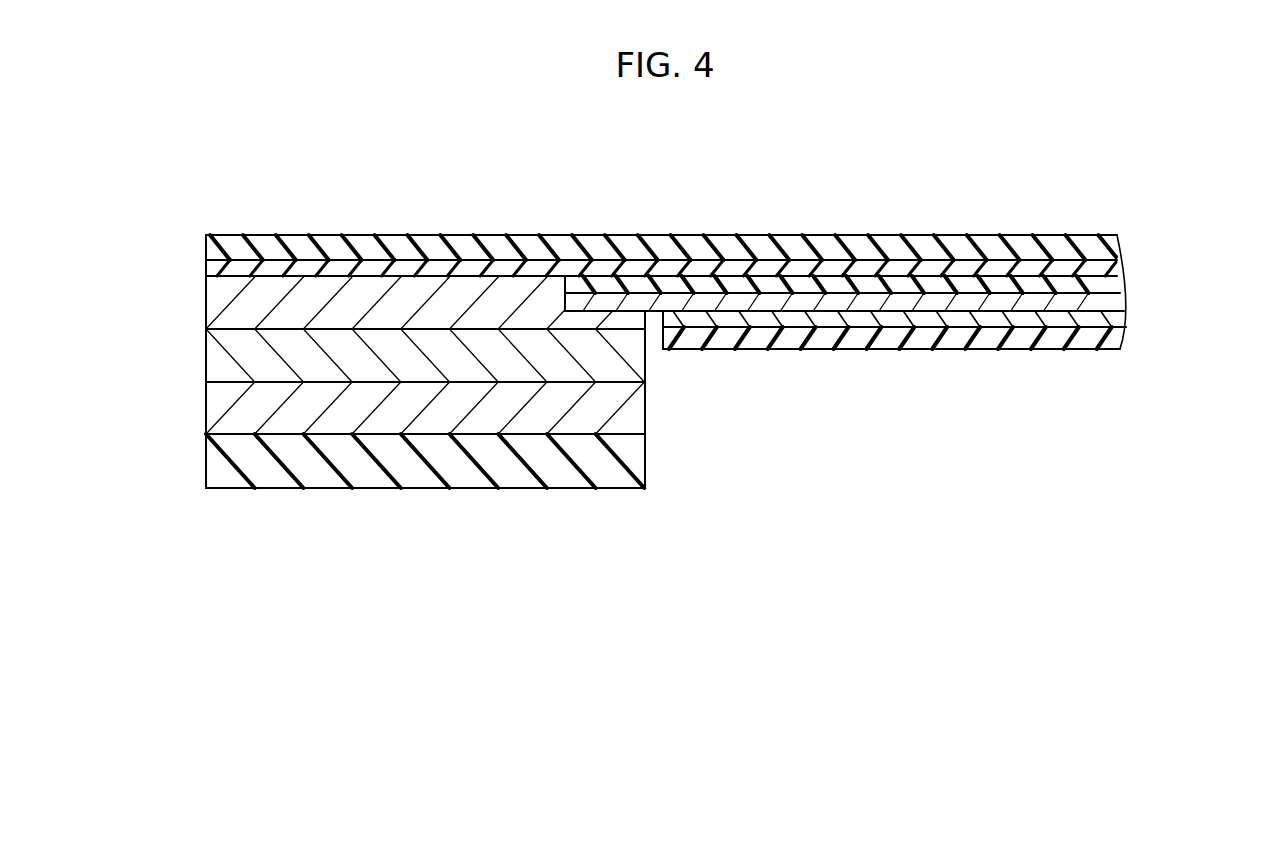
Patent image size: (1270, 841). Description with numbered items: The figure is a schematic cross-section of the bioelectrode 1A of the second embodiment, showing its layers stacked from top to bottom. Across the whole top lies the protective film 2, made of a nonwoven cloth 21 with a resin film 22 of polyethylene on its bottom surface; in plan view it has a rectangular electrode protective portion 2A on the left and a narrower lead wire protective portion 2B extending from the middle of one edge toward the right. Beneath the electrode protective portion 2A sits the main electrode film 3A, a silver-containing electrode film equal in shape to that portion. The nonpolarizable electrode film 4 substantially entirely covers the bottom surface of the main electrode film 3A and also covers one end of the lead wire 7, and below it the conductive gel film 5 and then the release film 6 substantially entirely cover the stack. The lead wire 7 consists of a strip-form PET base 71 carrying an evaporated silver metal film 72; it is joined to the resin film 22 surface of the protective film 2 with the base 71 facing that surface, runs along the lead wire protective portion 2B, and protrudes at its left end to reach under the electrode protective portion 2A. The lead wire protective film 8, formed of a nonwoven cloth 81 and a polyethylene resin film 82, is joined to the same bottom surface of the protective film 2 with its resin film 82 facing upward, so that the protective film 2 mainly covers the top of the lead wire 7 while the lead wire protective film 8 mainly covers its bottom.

The bioelectrode 1A is at (653, 160).
The protective film 2 is at (128, 226).
The electrode protective portion 2A is at (650, 220).
The lead wire protective portion 2B is at (660, 220).
The nonwoven cloth 21 is at (205, 252).
The resin film 22 is at (205, 273).
The main electrode film 3A is at (205, 308).
The nonpolarizable electrode film 4 is at (205, 360).
The conductive gel film 5 is at (205, 405).
The release film 6 is at (205, 467).
The lead wire 7 is at (1205, 236).
The base 71 is at (1112, 280).
The metal film 72 is at (1117, 305).
The lead wire protective film 8 is at (1205, 308).
The nonwoven cloth 81 is at (1118, 337).
The resin film 82 is at (1120, 315).